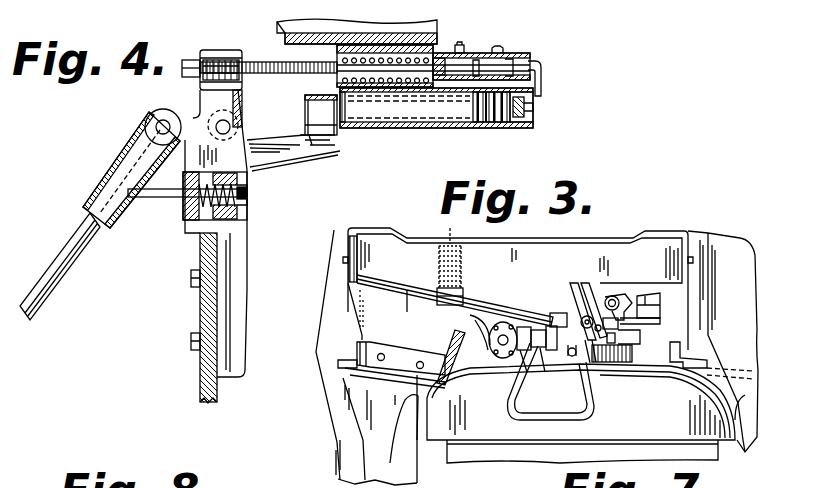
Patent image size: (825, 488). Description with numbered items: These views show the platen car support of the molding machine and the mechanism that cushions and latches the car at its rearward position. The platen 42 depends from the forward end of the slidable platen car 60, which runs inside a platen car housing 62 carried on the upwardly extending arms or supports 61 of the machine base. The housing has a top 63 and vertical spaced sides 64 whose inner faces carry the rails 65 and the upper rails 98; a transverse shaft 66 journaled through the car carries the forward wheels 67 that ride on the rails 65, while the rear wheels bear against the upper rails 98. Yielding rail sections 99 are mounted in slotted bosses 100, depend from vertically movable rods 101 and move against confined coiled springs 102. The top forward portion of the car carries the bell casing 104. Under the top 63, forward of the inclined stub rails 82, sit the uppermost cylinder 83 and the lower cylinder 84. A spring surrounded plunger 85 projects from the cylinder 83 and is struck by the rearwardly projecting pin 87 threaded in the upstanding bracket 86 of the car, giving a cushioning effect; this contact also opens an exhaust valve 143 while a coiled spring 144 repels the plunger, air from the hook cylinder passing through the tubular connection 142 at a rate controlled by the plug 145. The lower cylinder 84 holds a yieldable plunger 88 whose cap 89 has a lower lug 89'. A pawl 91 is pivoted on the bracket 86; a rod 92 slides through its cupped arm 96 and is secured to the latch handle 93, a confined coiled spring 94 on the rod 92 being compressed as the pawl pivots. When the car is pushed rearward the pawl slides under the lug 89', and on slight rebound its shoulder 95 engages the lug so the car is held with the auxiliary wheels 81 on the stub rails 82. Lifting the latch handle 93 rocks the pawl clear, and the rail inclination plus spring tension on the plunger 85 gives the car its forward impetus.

In FIG. 3, the platen 42 is at (533, 453).
In FIG. 4, the platen car 60 is at (208, 313).
In FIG. 3, the platen car 60 is at (661, 388).
In FIG. 3, the arms or supports 61 is at (353, 442).
In FIG. 3, the platen car housing 62 is at (348, 312).
In FIG. 4, the top 63 is at (433, 30).
In FIG. 3, the top 63 is at (577, 252).
In FIG. 3, the sides 64 is at (732, 310).
In FIG. 3, the rails 65 is at (393, 348).
In FIG. 3, the transverse shaft 66 is at (620, 325).
In FIG. 3, the forward wheels 67 is at (455, 335).
In FIG. 3, the auxiliary wheels 81 is at (530, 350).
In FIG. 3, the stub rails 82 is at (530, 363).
In FIG. 3, the uppermost cylinder 83 is at (618, 293).
In FIG. 4, the lower cylinder 84 is at (500, 128).
In FIG. 3, the lower cylinder 84 is at (657, 318).
In FIG. 4, the plunger 85 is at (337, 57).
In FIG. 4, the bracket 86 is at (238, 107).
In FIG. 3, the bracket 86 is at (572, 290).
In FIG. 4, the pin 87 is at (267, 52).
In FIG. 3, the pin 87 is at (587, 290).
In FIG. 4, the plunger 88 is at (476, 128).
In FIG. 4, the cap 89 is at (306, 115).
In FIG. 3, the cap 89 is at (662, 302).
In FIG. 4, the lug 89' is at (326, 156).
In FIG. 4, the pawl 91 is at (291, 159).
In FIG. 3, the pawl 91 is at (641, 317).
In FIG. 4, the rod 92 is at (152, 198).
In FIG. 3, the rod 92 is at (572, 358).
In FIG. 4, the latch handle 93 is at (58, 273).
In FIG. 3, the latch handle 93 is at (596, 418).
In FIG. 4, the coiled spring 94 is at (197, 180).
In FIG. 4, the shoulder 95 is at (337, 133).
In FIG. 4, the cupped arm 96 is at (244, 184).
In FIG. 3, the upper rails 98 is at (508, 290).
In FIG. 3, the rail sections 99 is at (407, 302).
In FIG. 3, the slotted bosses 100 is at (437, 282).
In FIG. 3, the rods 101 is at (455, 245).
In FIG. 3, the coiled springs 102 is at (463, 262).
In FIG. 3, the bell casing 104 is at (632, 354).
In FIG. 4, the tubular connection 142 is at (544, 92).
In FIG. 4, the exhaust valve 143 is at (514, 58).
In FIG. 4, the coiled spring 144 is at (458, 50).
In FIG. 4, the plug 145 is at (500, 49).